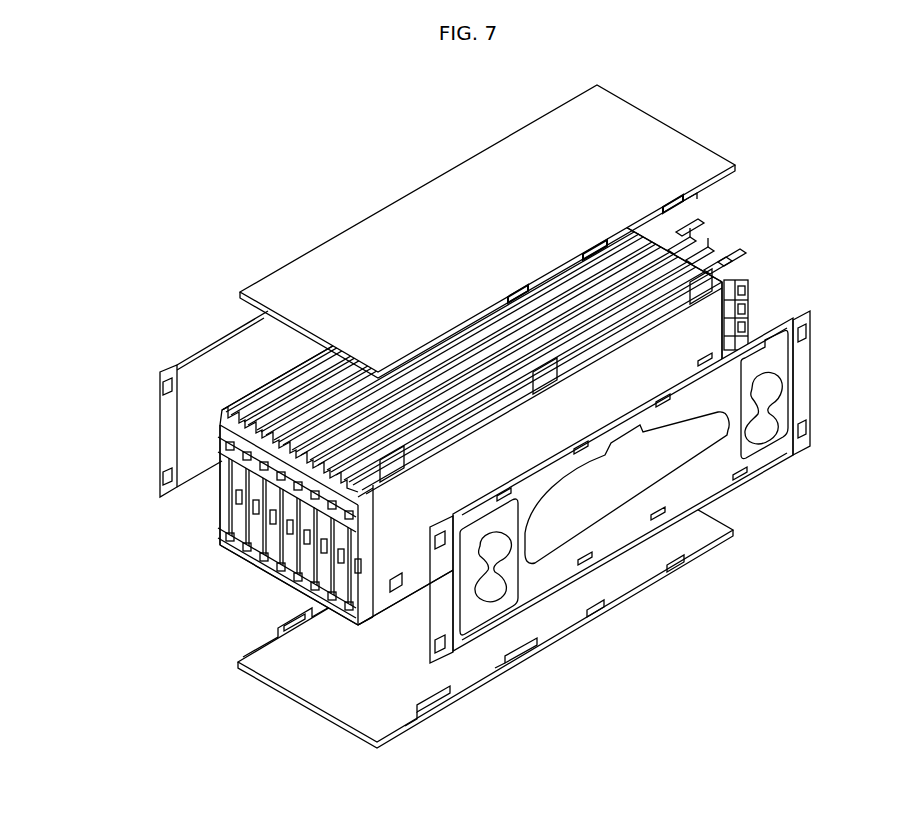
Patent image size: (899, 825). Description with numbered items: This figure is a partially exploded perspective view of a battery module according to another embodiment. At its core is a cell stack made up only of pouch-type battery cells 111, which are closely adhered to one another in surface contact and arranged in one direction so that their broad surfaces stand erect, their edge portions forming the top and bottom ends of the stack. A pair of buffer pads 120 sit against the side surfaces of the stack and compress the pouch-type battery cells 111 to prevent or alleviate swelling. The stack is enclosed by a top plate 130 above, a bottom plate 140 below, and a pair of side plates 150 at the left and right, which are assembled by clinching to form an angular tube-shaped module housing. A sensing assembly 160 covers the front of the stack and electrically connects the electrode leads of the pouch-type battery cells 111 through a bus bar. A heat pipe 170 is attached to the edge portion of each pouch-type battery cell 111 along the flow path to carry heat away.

The pouch-type battery cell 111 is at (750, 274).
The buffer pad 120 is at (188, 476).
The top plate 130 is at (455, 185).
The bottom plate 140 is at (352, 714).
The side plate 150 is at (162, 411).
The sensing assembly 160 is at (206, 563).
The heat pipe 170 is at (705, 238).